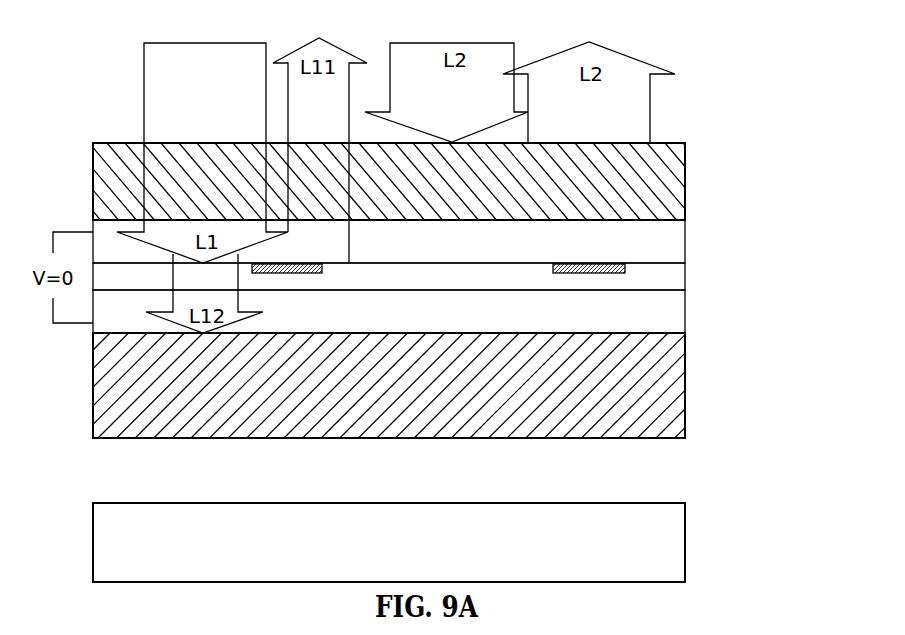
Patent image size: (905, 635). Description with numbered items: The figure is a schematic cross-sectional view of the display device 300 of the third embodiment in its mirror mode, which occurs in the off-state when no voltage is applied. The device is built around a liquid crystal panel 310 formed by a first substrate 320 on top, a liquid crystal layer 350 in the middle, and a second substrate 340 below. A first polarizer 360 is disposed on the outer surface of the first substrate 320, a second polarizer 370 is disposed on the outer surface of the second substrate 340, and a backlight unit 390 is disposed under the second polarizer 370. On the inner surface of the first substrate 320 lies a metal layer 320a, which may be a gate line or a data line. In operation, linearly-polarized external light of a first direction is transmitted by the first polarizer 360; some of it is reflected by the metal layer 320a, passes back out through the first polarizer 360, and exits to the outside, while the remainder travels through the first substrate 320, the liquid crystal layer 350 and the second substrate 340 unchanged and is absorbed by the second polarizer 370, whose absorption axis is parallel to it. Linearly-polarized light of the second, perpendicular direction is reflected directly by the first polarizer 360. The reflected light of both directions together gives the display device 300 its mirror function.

The display device 300 is at (688, 94).
The liquid crystal panel 310 is at (770, 242).
The first substrate 320 is at (663, 243).
The metal layer 320a is at (291, 273).
The second substrate 340 is at (663, 307).
The liquid crystal layer 350 is at (663, 276).
The first polarizer 360 is at (663, 185).
The second polarizer 370 is at (665, 380).
The backlight unit 390 is at (663, 543).